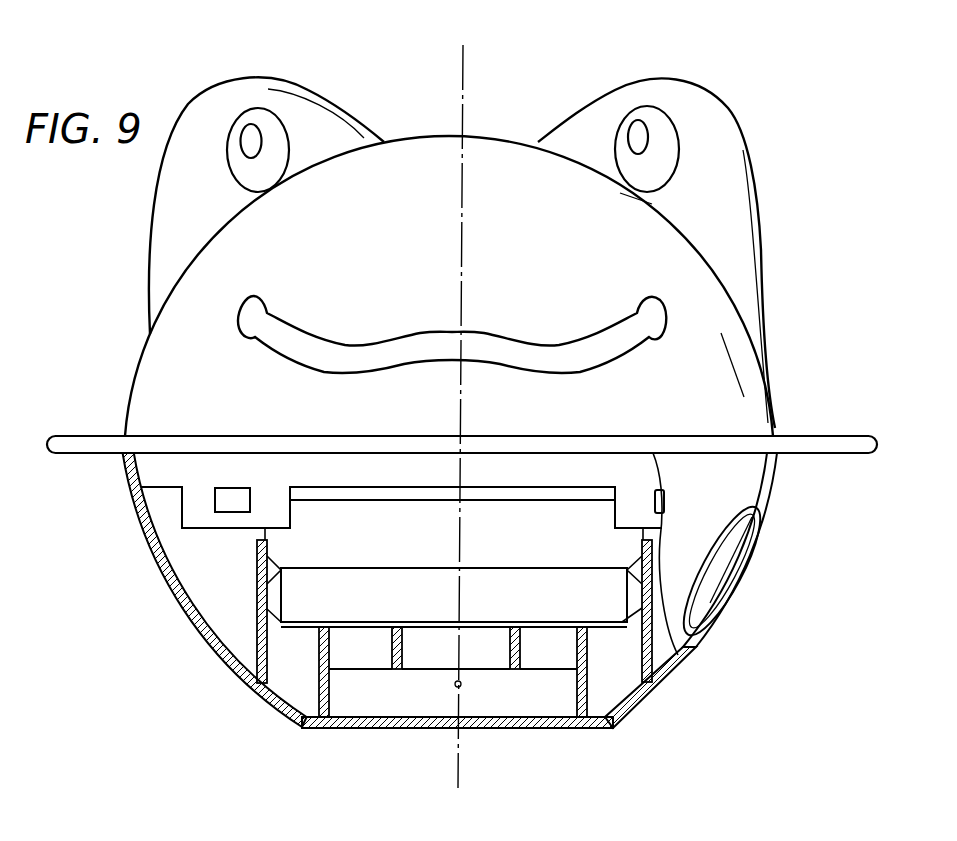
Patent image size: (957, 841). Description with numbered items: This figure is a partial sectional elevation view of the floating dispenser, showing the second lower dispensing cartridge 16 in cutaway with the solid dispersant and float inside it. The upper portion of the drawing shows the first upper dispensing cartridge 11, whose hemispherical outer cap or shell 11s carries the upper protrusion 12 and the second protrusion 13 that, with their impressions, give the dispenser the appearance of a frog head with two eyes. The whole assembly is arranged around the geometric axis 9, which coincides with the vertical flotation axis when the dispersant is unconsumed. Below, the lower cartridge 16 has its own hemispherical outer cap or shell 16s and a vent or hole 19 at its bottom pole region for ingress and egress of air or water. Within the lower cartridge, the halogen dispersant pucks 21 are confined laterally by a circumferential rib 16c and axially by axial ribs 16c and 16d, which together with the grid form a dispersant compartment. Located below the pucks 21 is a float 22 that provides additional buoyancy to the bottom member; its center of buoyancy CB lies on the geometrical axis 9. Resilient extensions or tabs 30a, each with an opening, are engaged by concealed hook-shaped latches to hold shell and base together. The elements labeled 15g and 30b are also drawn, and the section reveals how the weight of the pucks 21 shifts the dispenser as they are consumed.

The geometric axis 9 is at (462, 98).
The first upper dispensing cartridge 11 is at (512, 136).
The upper protrusion 12 is at (697, 88).
The second protrusion 13 is at (178, 127).
The outer cap or shell 11s is at (740, 363).
The ground plane 15g is at (852, 436).
The second lower dispensing cartridge 16 is at (700, 642).
The circumferential rib 16c is at (257, 607).
The axial rib 16d is at (317, 662).
The outer cap or shell 16s is at (660, 673).
The vent or hole 19 is at (291, 728).
The consumable dispersant pucks 21 is at (613, 588).
The float 22 is at (538, 697).
The resilient extension or tab 30a is at (188, 522).
The mounting tab 30b is at (228, 500).
The center of buoyancy CB is at (456, 686).